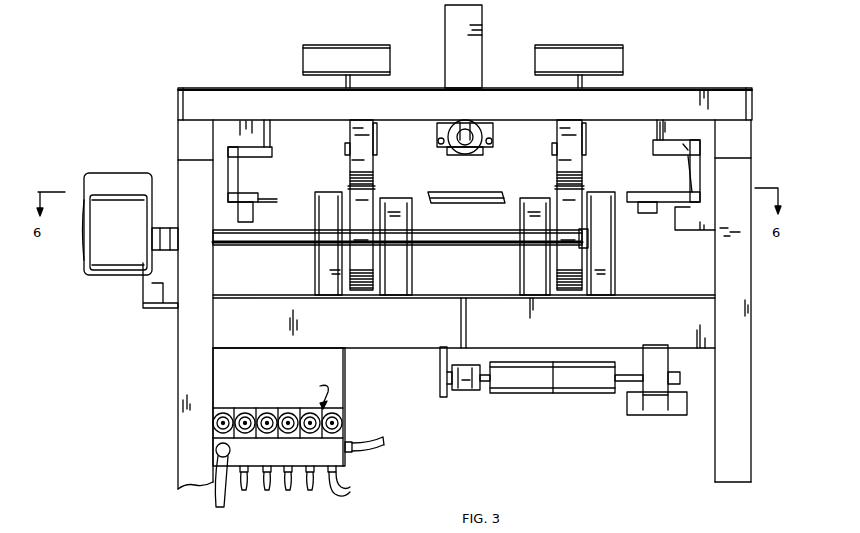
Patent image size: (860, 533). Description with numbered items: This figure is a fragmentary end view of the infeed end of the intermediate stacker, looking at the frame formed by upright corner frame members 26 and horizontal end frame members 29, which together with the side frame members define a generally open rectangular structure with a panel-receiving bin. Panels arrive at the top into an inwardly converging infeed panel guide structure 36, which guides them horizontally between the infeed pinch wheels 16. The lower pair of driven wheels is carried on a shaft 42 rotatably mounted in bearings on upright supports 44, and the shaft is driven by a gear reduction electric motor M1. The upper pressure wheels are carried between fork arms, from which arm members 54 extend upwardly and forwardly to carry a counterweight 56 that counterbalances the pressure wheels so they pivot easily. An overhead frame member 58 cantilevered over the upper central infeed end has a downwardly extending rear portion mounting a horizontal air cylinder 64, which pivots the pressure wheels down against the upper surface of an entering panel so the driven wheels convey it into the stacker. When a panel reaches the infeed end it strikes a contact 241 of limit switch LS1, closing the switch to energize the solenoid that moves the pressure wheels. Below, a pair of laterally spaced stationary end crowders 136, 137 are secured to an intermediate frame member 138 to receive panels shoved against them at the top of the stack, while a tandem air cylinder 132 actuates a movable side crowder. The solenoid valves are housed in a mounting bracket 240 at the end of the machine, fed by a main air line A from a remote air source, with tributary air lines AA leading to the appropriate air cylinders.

The horizontal end frame member 29 is at (254, 88).
The upright corner frame member 26 is at (178, 358).
The intermediate frame member 138 is at (385, 349).
The overhead frame member 58 is at (461, 19).
The counterweight 56 is at (360, 44).
The arm member 54 is at (350, 82).
The infeed panel guide structure 36 is at (252, 147).
The infeed pinch wheels 16 is at (357, 205).
The upright support 44 is at (315, 271).
The shaft 42 is at (484, 250).
The stationary end crowder 136 is at (412, 215).
The stationary end crowder 137 is at (520, 214).
The horizontal air cylinder 64 is at (466, 155).
The contact 241 is at (645, 190).
The limit switch LS1 is at (660, 213).
The gear reduction electric motor M1 is at (125, 172).
The tandem air cylinder 132 is at (566, 395).
The mounting bracket 240 is at (348, 392).
The main air line A is at (384, 440).
The tributary air line AA is at (350, 492).